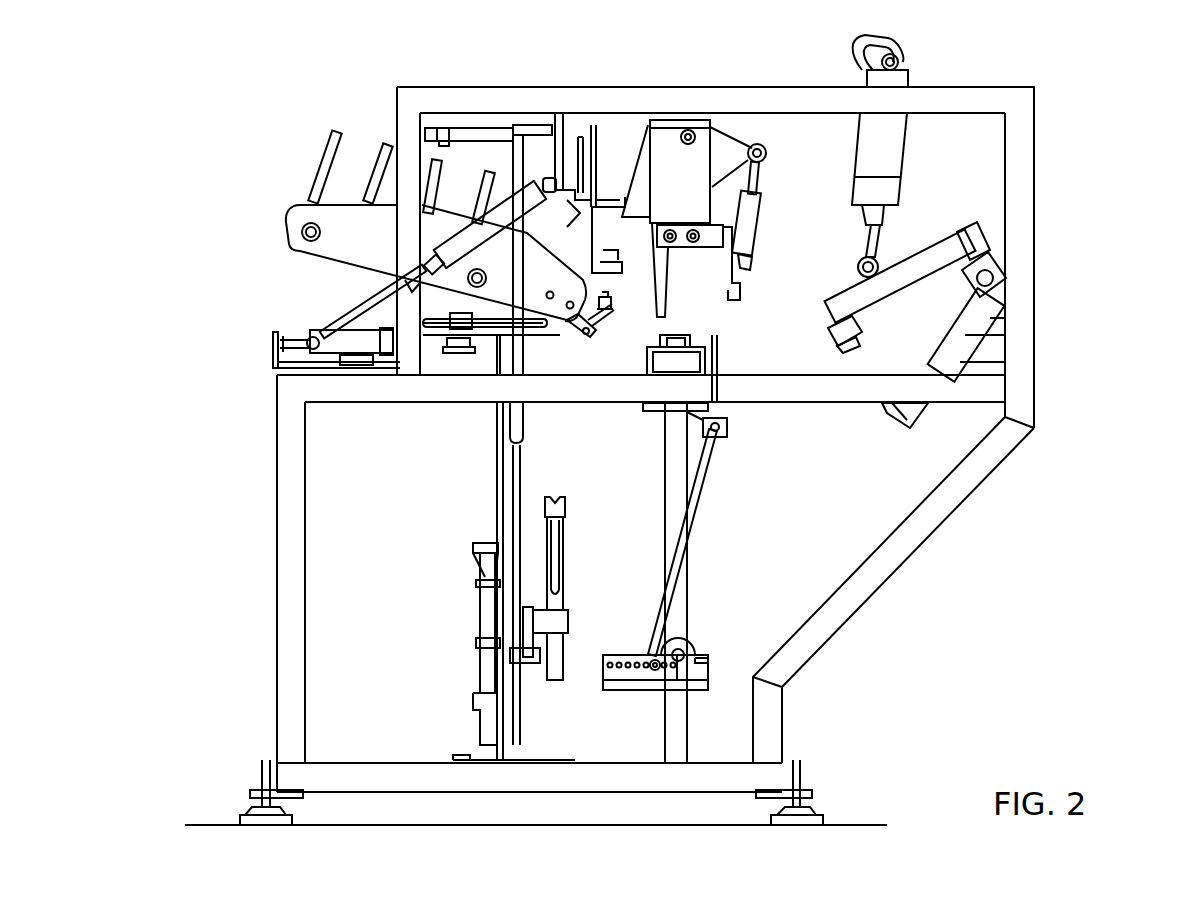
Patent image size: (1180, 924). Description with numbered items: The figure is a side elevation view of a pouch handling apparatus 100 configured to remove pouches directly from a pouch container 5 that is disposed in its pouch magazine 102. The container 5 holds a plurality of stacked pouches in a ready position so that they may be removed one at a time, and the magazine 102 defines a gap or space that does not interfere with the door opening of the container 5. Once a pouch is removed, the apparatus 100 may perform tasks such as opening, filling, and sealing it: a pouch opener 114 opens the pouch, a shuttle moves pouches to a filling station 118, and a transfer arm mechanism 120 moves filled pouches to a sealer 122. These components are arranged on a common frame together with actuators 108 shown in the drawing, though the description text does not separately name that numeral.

The pouch container 5 is at (308, 159).
The pouch handling apparatus 100 is at (1083, 110).
The magazine 102 is at (310, 217).
The actuators 108 is at (488, 345).
The pouch opener 114 is at (605, 340).
The filling station 118 is at (659, 68).
The transfer arm mechanism 120 is at (718, 466).
The sealer 122 is at (880, 428).